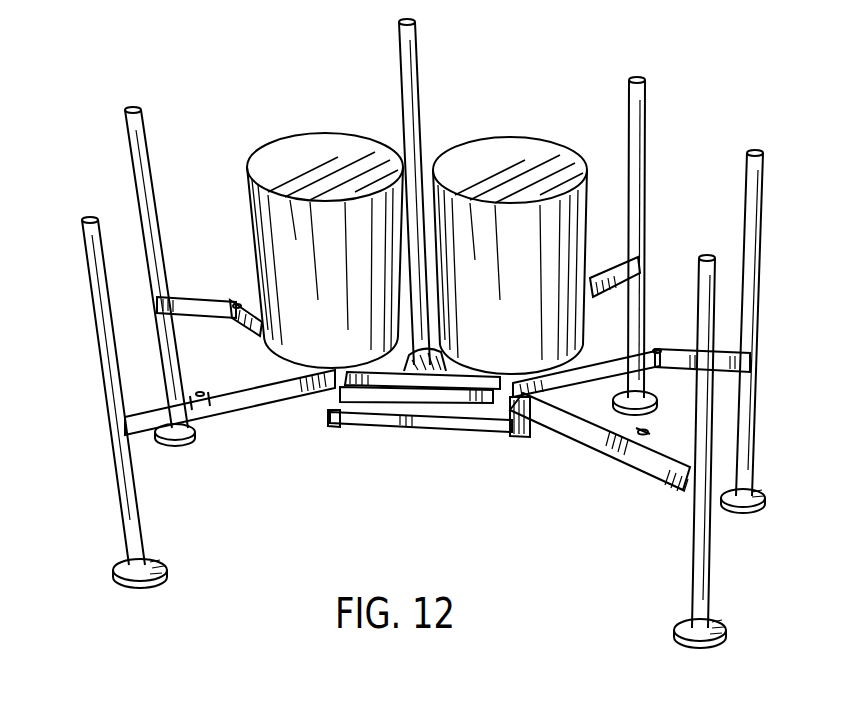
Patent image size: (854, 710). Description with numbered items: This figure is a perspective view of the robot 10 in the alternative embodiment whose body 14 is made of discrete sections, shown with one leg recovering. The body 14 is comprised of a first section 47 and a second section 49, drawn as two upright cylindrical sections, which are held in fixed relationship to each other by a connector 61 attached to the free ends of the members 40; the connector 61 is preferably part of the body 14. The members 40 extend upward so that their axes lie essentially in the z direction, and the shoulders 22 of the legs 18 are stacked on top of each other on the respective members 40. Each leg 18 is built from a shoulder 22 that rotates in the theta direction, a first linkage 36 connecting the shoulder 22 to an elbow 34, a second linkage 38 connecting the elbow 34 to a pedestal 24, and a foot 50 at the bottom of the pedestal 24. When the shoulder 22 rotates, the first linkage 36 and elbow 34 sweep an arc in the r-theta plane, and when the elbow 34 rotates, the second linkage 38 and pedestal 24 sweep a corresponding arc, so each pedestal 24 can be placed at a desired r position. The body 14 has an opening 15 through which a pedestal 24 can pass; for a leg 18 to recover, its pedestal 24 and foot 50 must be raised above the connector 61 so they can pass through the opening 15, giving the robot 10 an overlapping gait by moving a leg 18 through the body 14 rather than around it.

The robot 10 is at (648, 58).
The body 14 is at (356, 123).
The opening 15 is at (427, 177).
The leg 18 is at (84, 287).
The shoulder 22 is at (337, 394).
The pedestal 24 is at (412, 97).
The elbow 34 is at (649, 432).
The first linkage 36 is at (252, 400).
The second linkage 38 is at (140, 440).
The member 40 is at (332, 426).
The first section 47 is at (332, 283).
The second section 49 is at (525, 283).
The foot 50 is at (752, 505).
The connector 61 is at (465, 432).